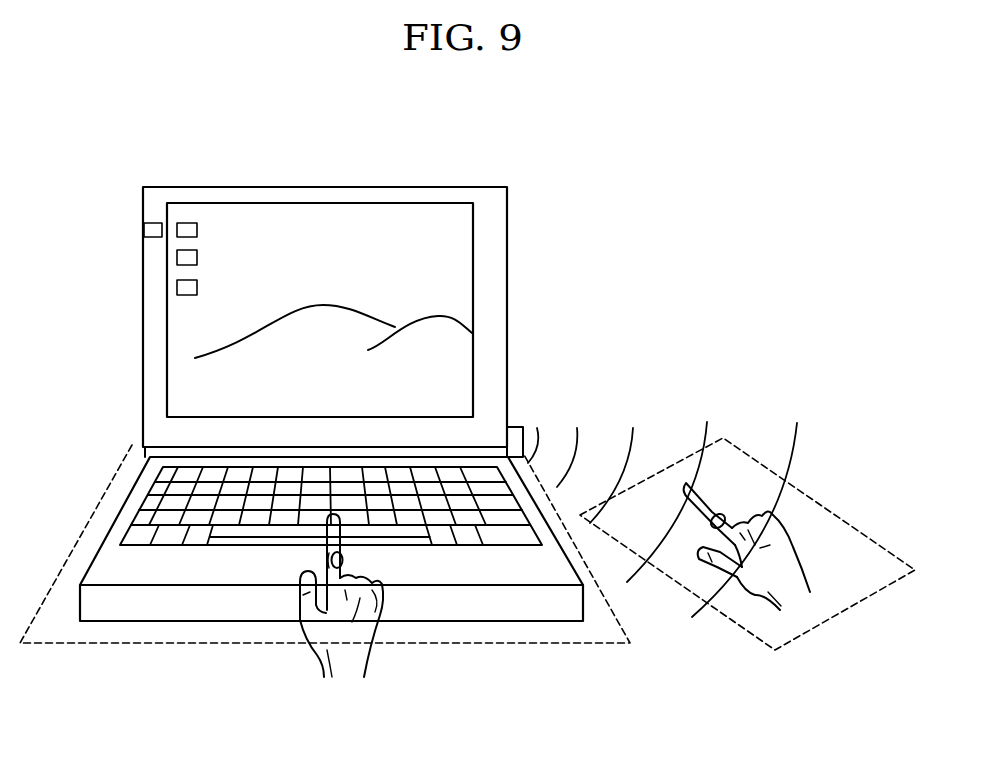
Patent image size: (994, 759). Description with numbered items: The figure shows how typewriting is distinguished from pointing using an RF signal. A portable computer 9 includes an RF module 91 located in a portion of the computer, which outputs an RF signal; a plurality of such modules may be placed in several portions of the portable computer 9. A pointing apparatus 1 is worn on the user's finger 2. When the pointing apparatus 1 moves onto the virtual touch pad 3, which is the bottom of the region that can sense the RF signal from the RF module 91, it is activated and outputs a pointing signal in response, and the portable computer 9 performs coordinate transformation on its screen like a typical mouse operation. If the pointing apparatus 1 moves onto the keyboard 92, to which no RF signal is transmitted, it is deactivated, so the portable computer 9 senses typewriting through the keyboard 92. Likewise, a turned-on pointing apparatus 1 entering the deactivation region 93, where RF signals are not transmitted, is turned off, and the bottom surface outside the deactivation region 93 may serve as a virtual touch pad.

The pointing apparatus 1 is at (725, 516).
The finger 2 is at (342, 536).
The virtual touch pad 3 is at (818, 500).
The portable computer 9 is at (326, 187).
The RF module 91 is at (513, 427).
The keyboard 92 is at (157, 502).
The deactivation region 93 is at (505, 645).